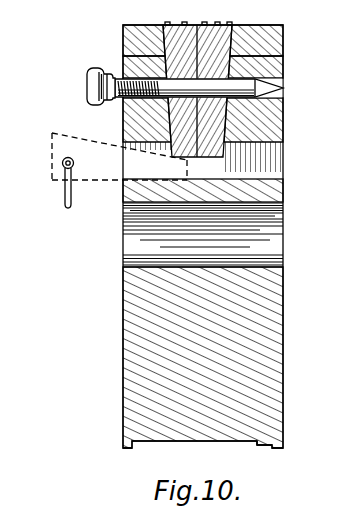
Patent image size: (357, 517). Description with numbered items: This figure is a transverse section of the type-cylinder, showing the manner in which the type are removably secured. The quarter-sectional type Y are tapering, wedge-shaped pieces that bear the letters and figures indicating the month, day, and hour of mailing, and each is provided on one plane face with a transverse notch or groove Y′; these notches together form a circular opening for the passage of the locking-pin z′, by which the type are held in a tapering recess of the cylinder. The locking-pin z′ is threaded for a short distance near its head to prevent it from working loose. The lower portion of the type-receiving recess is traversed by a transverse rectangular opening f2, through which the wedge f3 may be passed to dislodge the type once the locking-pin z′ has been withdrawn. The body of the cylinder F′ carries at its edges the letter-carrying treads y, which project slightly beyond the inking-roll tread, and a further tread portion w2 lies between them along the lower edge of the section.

The quarter-sectional type Y is at (197, 25).
The transverse notch or groove Y′ is at (283, 90).
The locking-pin z′ is at (86, 86).
The transverse rectangular opening f2 is at (253, 160).
The wedge f3 is at (75, 165).
The body block F′ is at (283, 333).
The letter-carrying tread y is at (191, 461).
The recess w2 is at (253, 452).